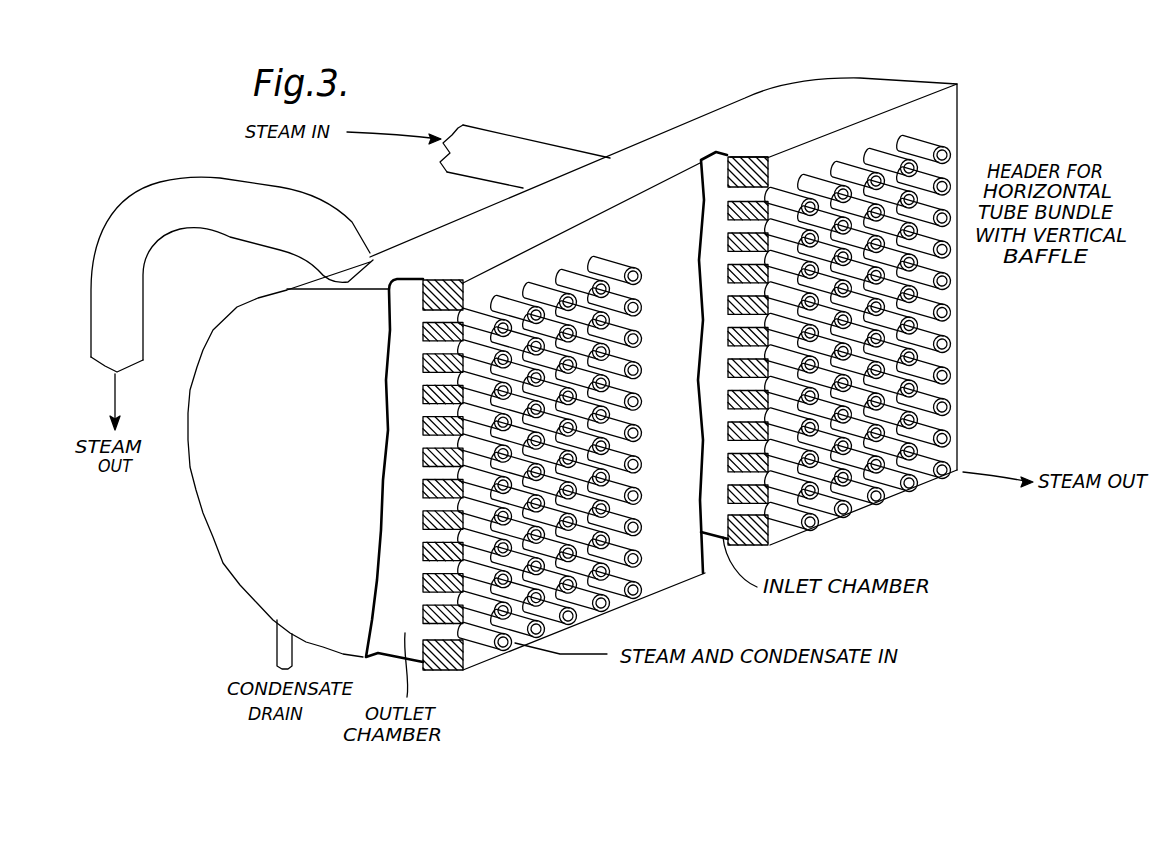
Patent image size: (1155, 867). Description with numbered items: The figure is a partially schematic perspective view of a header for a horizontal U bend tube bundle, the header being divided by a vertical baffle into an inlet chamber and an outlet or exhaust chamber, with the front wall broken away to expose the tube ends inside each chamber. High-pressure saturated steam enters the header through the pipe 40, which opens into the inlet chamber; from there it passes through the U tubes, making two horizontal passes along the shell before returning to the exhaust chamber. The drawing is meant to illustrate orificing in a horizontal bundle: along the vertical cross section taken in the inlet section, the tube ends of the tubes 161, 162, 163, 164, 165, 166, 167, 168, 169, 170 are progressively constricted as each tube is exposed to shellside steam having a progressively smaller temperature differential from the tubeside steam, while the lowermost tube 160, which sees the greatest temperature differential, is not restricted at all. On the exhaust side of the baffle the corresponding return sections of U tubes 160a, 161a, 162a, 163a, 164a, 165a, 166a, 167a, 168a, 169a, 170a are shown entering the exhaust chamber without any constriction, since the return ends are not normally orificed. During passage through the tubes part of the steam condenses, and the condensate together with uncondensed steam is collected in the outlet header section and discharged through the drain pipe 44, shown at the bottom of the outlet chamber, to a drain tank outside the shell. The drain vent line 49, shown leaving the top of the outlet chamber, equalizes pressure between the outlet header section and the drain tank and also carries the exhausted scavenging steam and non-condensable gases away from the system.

The pipe 40 is at (527, 146).
The drain pipe 44 is at (272, 634).
The drain vent line 49 is at (257, 227).
The tube 160 is at (787, 510).
The tube 161 is at (787, 478).
The tube 162 is at (787, 447).
The tube 163 is at (787, 416).
The tube 164 is at (787, 384).
The tube 165 is at (787, 352).
The tube 166 is at (787, 321).
The tube 167 is at (787, 290).
The tube 168 is at (787, 258).
The tube 169 is at (787, 226).
The tube 170 is at (787, 195).
The return section of U tube 160a is at (481, 633).
The return section of U tube 161a is at (481, 602).
The return section of U tube 162a is at (481, 570).
The return section of U tube 163a is at (481, 539).
The return section of U tube 164a is at (481, 507).
The return section of U tube 165a is at (481, 476).
The return section of U tube 166a is at (481, 445).
The return section of U tube 167a is at (481, 413).
The return section of U tube 168a is at (481, 382).
The return section of U tube 169a is at (481, 350).
The return section of U tube 170a is at (481, 319).